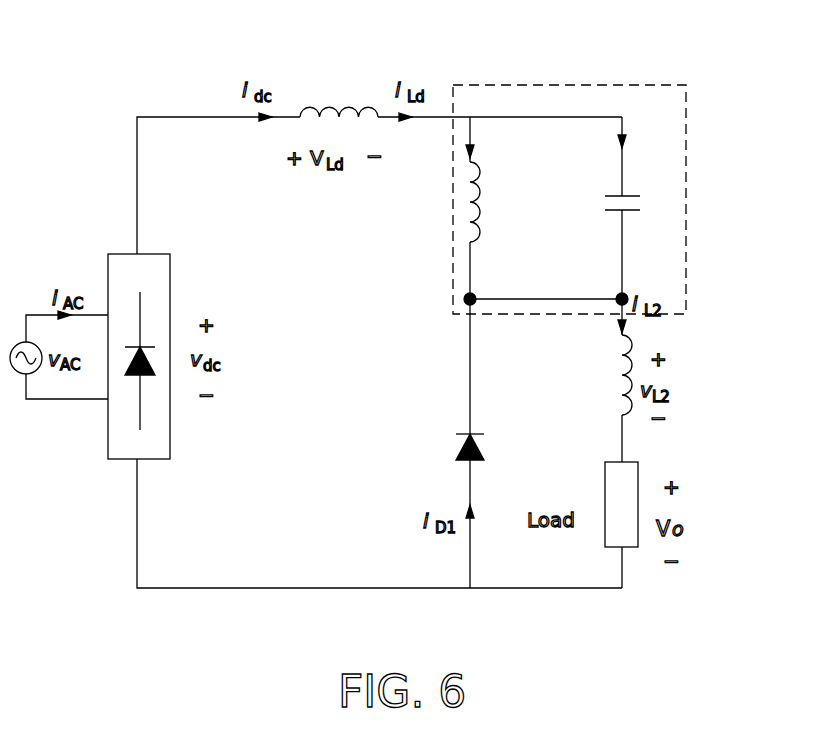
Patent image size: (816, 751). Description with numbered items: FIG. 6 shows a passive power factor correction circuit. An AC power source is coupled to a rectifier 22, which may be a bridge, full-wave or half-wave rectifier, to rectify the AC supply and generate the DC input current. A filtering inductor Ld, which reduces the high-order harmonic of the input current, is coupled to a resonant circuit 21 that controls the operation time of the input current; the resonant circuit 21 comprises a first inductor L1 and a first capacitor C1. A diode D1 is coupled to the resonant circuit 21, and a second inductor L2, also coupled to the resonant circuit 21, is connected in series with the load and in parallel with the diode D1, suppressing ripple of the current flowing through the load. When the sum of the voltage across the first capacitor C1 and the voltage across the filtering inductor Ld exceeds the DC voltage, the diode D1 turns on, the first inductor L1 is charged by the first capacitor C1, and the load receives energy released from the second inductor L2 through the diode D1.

The resonant circuit 21 is at (569, 168).
The rectifier 22 is at (117, 460).
The filtering inductor Ld is at (339, 98).
The first inductor L1 is at (454, 202).
The first capacitor C1 is at (604, 209).
The diode D1 is at (452, 447).
The second inductor L2 is at (604, 375).